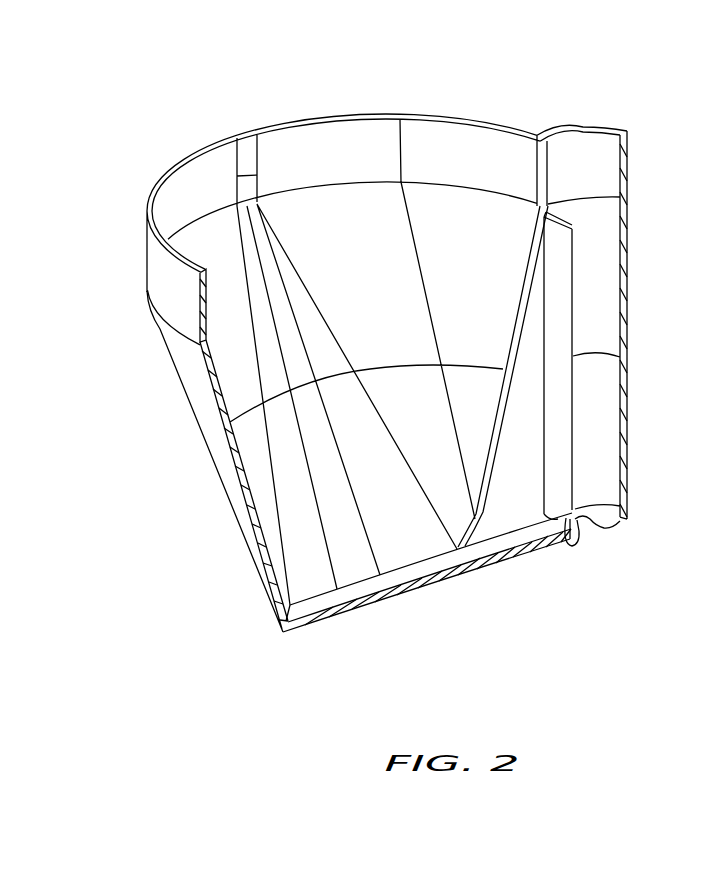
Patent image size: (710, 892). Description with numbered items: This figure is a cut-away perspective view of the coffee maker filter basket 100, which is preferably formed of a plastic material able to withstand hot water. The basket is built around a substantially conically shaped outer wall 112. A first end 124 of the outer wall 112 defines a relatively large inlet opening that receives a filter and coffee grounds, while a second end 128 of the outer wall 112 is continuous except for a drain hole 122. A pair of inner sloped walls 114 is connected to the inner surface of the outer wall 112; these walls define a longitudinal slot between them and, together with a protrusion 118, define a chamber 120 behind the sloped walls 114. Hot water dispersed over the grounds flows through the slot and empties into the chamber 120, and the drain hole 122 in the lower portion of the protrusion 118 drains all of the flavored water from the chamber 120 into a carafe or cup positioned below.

The filter basket 100 is at (392, 380).
The outer wall 112 is at (178, 362).
The inner sloped walls 114 is at (553, 323).
The protrusion 118 is at (585, 128).
The chamber 120 is at (593, 423).
The drain hole 122 is at (585, 537).
The first end 124 is at (208, 148).
The second end 128 is at (328, 624).